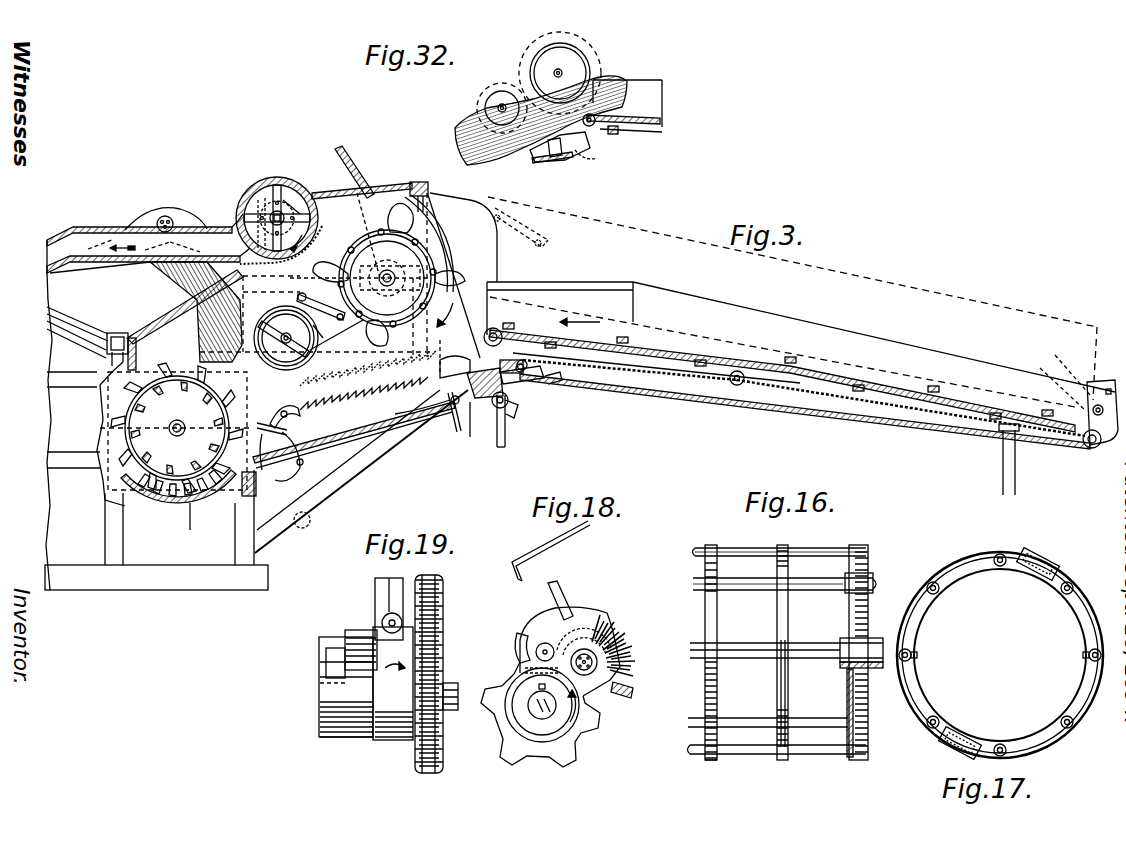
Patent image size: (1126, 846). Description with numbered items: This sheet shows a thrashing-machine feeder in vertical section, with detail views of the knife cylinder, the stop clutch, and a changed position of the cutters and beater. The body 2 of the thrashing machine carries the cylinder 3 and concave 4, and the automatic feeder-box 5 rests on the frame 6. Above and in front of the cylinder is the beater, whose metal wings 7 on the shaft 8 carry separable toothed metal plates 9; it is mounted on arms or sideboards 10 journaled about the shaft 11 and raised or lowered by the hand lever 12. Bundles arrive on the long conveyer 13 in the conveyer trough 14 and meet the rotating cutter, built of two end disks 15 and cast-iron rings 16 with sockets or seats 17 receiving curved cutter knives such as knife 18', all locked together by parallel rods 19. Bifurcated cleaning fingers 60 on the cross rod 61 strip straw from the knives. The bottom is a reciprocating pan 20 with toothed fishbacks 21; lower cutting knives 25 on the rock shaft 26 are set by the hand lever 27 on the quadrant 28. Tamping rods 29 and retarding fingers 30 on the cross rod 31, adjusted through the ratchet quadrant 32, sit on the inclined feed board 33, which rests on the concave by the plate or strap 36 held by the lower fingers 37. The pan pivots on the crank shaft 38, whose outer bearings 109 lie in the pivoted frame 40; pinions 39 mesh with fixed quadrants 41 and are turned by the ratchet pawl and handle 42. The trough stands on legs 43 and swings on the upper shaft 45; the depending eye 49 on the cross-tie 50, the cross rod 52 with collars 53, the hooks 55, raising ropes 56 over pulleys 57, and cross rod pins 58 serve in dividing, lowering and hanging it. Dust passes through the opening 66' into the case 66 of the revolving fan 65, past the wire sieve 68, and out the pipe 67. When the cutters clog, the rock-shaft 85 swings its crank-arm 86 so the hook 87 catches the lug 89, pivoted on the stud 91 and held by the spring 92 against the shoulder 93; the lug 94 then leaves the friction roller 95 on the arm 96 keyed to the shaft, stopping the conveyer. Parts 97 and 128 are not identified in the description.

In FIG. 3, the body of the thrashing machine 2 is at (156, 431).
In FIG. 3, the cylinder 3 is at (120, 428).
In FIG. 3, the concave 4 is at (193, 526).
In FIG. 3, the automatic feeder-box 5 is at (446, 348).
In FIG. 3, the frame 6 is at (358, 462).
In FIG. 3, the metal wings 7 is at (283, 336).
In FIG. 3, the beater shaft 8 is at (291, 339).
In FIG. 32, the beater shaft 8 is at (498, 109).
In FIG. 3, the separable toothed metal plates 9 is at (286, 338).
In FIG. 3, the arms or sideboards 10 is at (326, 335).
In FIG. 3, the cutter shaft 11 is at (394, 276).
In FIG. 32, the cutter shaft 11 is at (568, 63).
In FIG. 19, the cutter shaft 11 is at (452, 690).
In FIG. 18, the cutter shaft 11 is at (545, 714).
In FIG. 16, the cutter shaft 11 is at (756, 645).
In FIG. 3, the hand lever 12 is at (345, 158).
In FIG. 3, the long conveyer 13 is at (700, 348).
In FIG. 32, the long conveyer 13 is at (613, 135).
In FIG. 3, the conveyer trough 14 is at (848, 330).
In FIG. 32, the conveyer trough 14 is at (627, 103).
In FIG. 16, the end disks 15 is at (853, 617).
In FIG. 3, the cast-iron rings 16 is at (390, 296).
In FIG. 32, the cast-iron rings 16 is at (588, 62).
In FIG. 16, the cast-iron rings 16 is at (718, 676).
In FIG. 17, the cast-iron rings 16 is at (916, 621).
In FIG. 16, the sockets or seats 17 is at (712, 546).
In FIG. 17, the sockets or seats 17 is at (1058, 570).
In FIG. 3, the blade 18' is at (461, 285).
In FIG. 3, the parallel rods 19 is at (342, 266).
In FIG. 16, the parallel rods 19 is at (762, 548).
In FIG. 3, the reciprocating pan 20 is at (383, 408).
In FIG. 32, the reciprocating pan 20 is at (545, 158).
In FIG. 3, the toothed fishbacks 21 is at (340, 345).
In FIG. 3, the lower cutting knives 25 is at (394, 366).
In FIG. 32, the lower cutting knives 25 is at (560, 162).
In FIG. 3, the rock shaft 26 is at (455, 360).
In FIG. 3, the hand lever 27 is at (455, 423).
In FIG. 3, the quadrant 28 is at (440, 412).
In FIG. 3, the tamping rods 29 is at (291, 408).
In FIG. 3, the retarding fingers 30 is at (262, 420).
In FIG. 3, the cross rod 31 is at (296, 474).
In FIG. 3, the ratchet quadrant 32 is at (313, 444).
In FIG. 3, the inclined feed board 33 is at (284, 462).
In FIG. 3, the plate or strap 36 is at (244, 465).
In FIG. 3, the lower fingers 37 is at (238, 484).
In FIG. 3, the crank shaft 38 is at (485, 383).
In FIG. 3, the pinions 39 is at (510, 400).
In FIG. 3, the pivoted frame 40 is at (482, 425).
In FIG. 3, the fixed quadrants 41 is at (504, 431).
In FIG. 3, the ratchet pawl and handle 42 is at (508, 416).
In FIG. 3, the legs 43 is at (1018, 470).
In FIG. 3, the upper shaft of the conveyer 45 is at (500, 327).
In FIG. 3, the depending eye 49 is at (445, 199).
In FIG. 3, the cross-tie 50 is at (430, 186).
In FIG. 3, the cross rod of the trough 52 is at (1095, 405).
In FIG. 3, the shoulders or collars 53 is at (1088, 412).
In FIG. 3, the hooks 55 is at (548, 370).
In FIG. 3, the raising ropes 56 is at (740, 410).
In FIG. 3, the pulleys 57 is at (535, 372).
In FIG. 3, the cross rod pins 58 is at (746, 380).
In FIG. 3, the bifurcated cleaning fingers 60 is at (324, 310).
In FIG. 3, the cross rod 61 is at (298, 297).
In FIG. 3, the revolving fan 65 is at (240, 198).
In FIG. 3, the fan case 66 is at (277, 203).
In FIG. 3, the opening 66' is at (310, 191).
In FIG. 3, the pipe 67 is at (103, 222).
In FIG. 3, the wire sieve 68 is at (328, 228).
In FIG. 3, the rock-shaft 85 is at (400, 184).
In FIG. 18, the second crank-arm 86 is at (560, 540).
In FIG. 18, the hook 87 is at (514, 578).
In FIG. 19, the lug 89 is at (377, 591).
In FIG. 18, the lug 89 is at (565, 595).
In FIG. 19, the short screw or stud 91 is at (362, 682).
In FIG. 18, the short screw or stud 91 is at (588, 676).
In FIG. 18, the spring 92 is at (630, 658).
In FIG. 19, the shoulder 93 is at (336, 732).
In FIG. 18, the shoulder 93 is at (625, 696).
In FIG. 18, the second lug 94 is at (520, 636).
In FIG. 19, the small friction roller 95 is at (350, 640).
In FIG. 18, the small friction roller 95 is at (546, 641).
In FIG. 19, the arm 96 is at (327, 662).
In FIG. 18, the arm 96 is at (522, 668).
In FIG. 3, the brace 97 is at (447, 262).
In FIG. 3, the outer bearings 109 is at (530, 380).
In FIG. 3, the shaft 128 is at (297, 531).